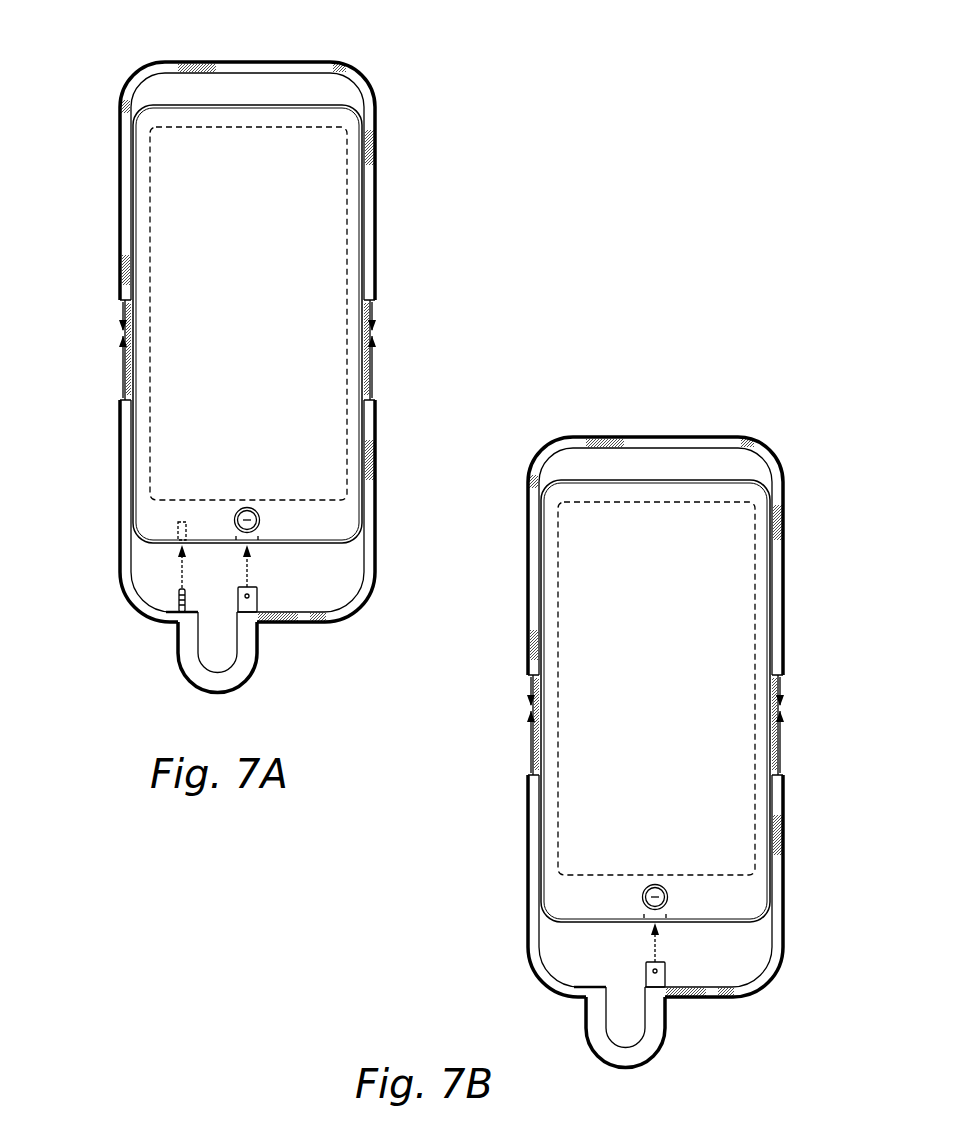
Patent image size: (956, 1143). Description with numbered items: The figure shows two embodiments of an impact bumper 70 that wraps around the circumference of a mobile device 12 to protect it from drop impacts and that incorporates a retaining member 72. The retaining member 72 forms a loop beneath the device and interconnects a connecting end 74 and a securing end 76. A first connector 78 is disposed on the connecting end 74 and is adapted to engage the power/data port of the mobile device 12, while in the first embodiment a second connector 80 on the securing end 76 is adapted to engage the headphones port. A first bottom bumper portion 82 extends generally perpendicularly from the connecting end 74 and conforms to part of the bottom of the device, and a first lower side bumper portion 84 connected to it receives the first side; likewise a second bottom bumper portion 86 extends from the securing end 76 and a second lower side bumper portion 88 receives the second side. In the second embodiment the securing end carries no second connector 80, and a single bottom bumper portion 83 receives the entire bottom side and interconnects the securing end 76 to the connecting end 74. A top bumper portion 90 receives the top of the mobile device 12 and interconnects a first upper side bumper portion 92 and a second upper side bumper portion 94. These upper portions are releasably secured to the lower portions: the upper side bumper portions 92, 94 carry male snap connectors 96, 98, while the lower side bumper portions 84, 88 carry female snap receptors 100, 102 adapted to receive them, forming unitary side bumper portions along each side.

In FIG. 7A, the mobile device 12 is at (319, 196).
In FIG. 7B, the mobile device 12 is at (700, 694).
In FIG. 7A, the impact bumper 70 is at (240, 330).
In FIG. 7A, the retaining member 72 is at (220, 689).
In FIG. 7B, the retaining member 72 is at (636, 1072).
In FIG. 7A, the connecting end 74 is at (248, 624).
In FIG. 7B, the connecting end 74 is at (679, 1024).
In FIG. 7A, the securing end 76 is at (183, 636).
In FIG. 7B, the securing end 76 is at (564, 1023).
In FIG. 7A, the first connector 78 is at (252, 590).
In FIG. 7B, the first connector 78 is at (697, 955).
In FIG. 7A, the second connector 80 is at (180, 590).
In FIG. 7A, the first bottom bumper portion 82 is at (315, 622).
In FIG. 7B, the first bottom bumper portion 82 is at (714, 994).
In FIG. 7B, the single bottom bumper portion 83 is at (601, 959).
In FIG. 7A, the first lower side bumper portion 84 is at (372, 508).
In FIG. 7B, the first lower side bumper portion 84 is at (806, 861).
In FIG. 7A, the second bottom bumper portion 86 is at (166, 617).
In FIG. 7B, the second bottom bumper portion 86 is at (555, 989).
In FIG. 7A, the second lower side bumper portion 88 is at (130, 510).
In FIG. 7B, the second lower side bumper portion 88 is at (493, 861).
In FIG. 7A, the top bumper portion 90 is at (258, 62).
In FIG. 7B, the top bumper portion 90 is at (655, 459).
In FIG. 7A, the first upper side bumper portion 92 is at (372, 204).
In FIG. 7B, the first upper side bumper portion 92 is at (813, 600).
In FIG. 7A, the second upper side bumper portion 94 is at (120, 175).
In FIG. 7B, the second upper side bumper portion 94 is at (496, 588).
In FIG. 7A, the male snap connector 96 is at (372, 304).
In FIG. 7B, the male snap connector 96 is at (813, 707).
In FIG. 7A, the male snap connector 98 is at (125, 305).
In FIG. 7B, the male snap connector 98 is at (496, 702).
In FIG. 7A, the female snap receptor 100 is at (372, 402).
In FIG. 7B, the female snap receptor 100 is at (816, 744).
In FIG. 7A, the female snap receptor 102 is at (125, 405).
In FIG. 7B, the female snap receptor 102 is at (489, 745).